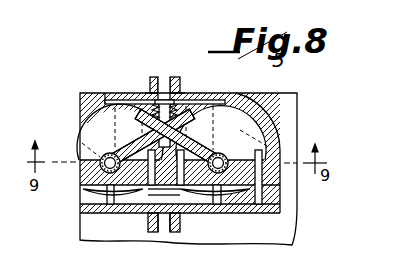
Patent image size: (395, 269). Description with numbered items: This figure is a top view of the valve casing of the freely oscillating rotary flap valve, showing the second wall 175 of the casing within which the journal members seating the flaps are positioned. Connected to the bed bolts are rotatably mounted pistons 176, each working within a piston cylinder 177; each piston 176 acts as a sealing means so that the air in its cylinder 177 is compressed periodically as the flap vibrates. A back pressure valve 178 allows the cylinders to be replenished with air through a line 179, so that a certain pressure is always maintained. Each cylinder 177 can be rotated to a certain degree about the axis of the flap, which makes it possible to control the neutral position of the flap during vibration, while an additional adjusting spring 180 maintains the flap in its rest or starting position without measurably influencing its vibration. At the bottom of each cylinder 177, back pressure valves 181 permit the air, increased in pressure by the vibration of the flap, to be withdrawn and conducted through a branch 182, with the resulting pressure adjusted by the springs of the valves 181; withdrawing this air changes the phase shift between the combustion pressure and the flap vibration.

The wall 175 is at (299, 89).
The piston 176 is at (174, 135).
The piston cylinder 177 is at (80, 110).
The back pressure valve 178 is at (176, 102).
The line 179 is at (150, 81).
The spring 180 is at (100, 162).
The back pressure valve 181 is at (80, 196).
The branch 182 is at (178, 233).